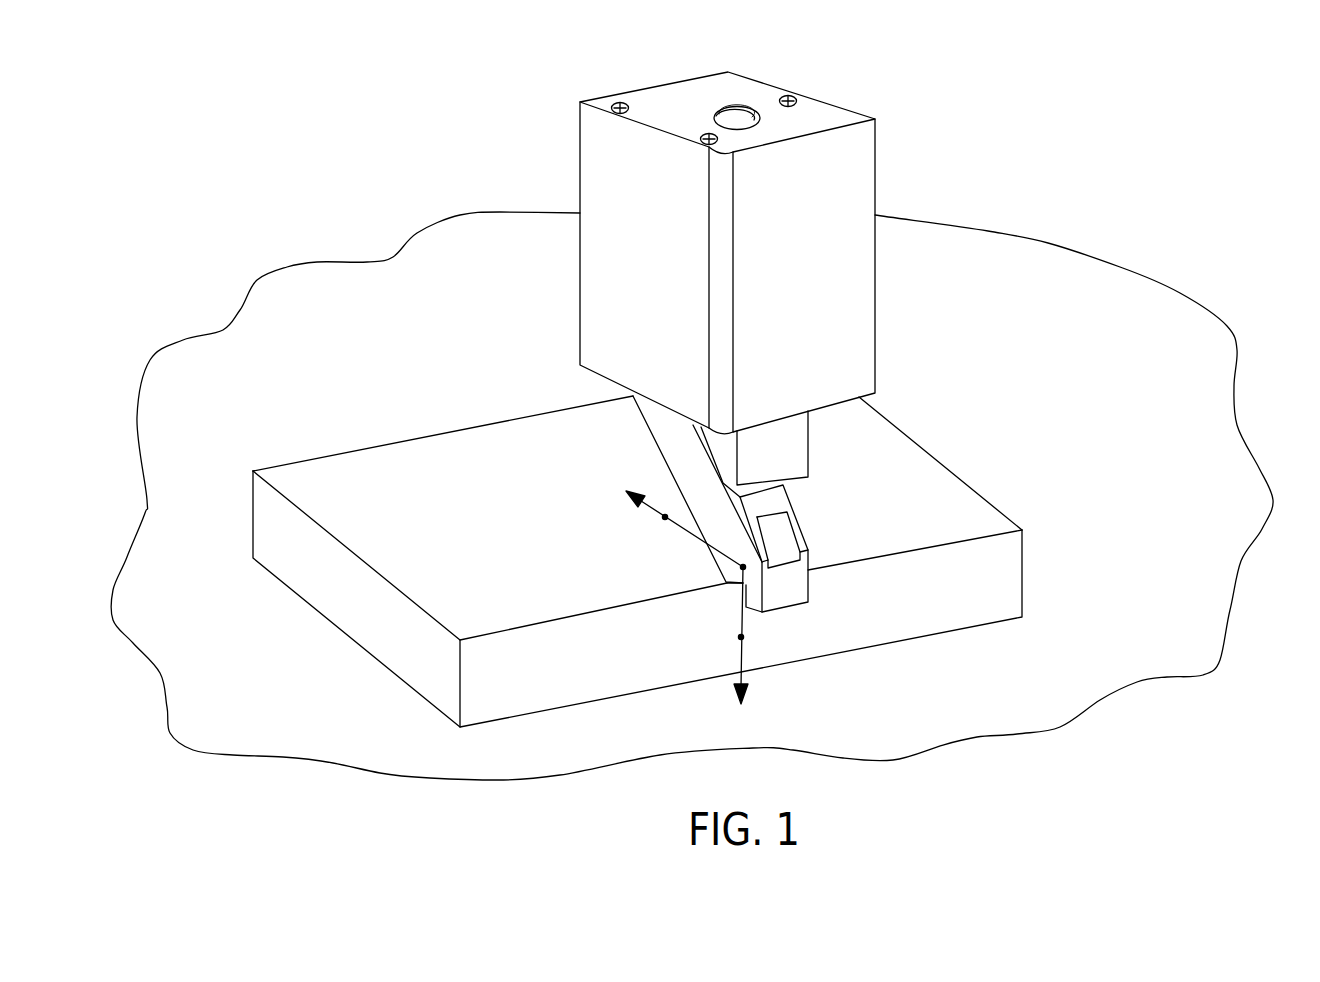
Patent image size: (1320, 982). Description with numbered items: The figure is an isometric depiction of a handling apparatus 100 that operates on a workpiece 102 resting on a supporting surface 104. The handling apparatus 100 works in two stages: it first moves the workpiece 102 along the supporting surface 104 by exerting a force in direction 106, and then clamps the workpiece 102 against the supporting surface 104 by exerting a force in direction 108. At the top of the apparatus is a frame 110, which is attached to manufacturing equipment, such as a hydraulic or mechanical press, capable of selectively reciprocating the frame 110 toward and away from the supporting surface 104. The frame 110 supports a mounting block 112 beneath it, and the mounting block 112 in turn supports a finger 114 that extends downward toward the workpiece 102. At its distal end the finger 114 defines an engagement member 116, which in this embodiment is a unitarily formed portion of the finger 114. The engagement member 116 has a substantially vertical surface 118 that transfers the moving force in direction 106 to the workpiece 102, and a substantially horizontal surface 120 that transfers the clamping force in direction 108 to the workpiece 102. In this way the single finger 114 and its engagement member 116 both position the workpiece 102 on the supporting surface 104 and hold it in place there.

The handling apparatus 100 is at (403, 160).
The workpiece 102 is at (417, 458).
The supporting surface 104 is at (1052, 276).
The direction of moving force 106 is at (665, 517).
The direction of clamping force 108 is at (741, 637).
The frame 110 is at (707, 87).
The mounting block 112 is at (795, 458).
The finger 114 is at (673, 442).
The engagement member 116 is at (836, 598).
The substantially vertical surface 118 is at (738, 594).
The substantially horizontal surface 120 is at (740, 583).